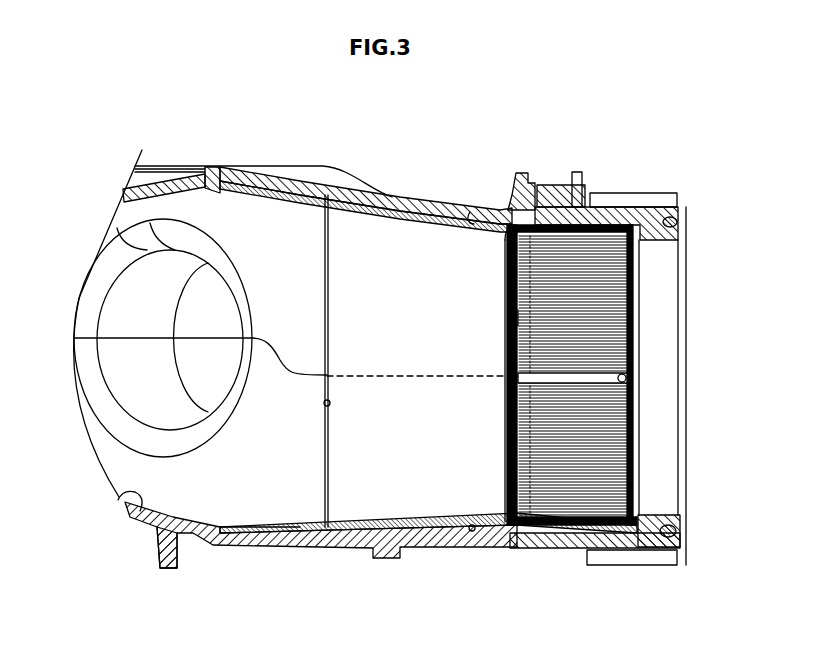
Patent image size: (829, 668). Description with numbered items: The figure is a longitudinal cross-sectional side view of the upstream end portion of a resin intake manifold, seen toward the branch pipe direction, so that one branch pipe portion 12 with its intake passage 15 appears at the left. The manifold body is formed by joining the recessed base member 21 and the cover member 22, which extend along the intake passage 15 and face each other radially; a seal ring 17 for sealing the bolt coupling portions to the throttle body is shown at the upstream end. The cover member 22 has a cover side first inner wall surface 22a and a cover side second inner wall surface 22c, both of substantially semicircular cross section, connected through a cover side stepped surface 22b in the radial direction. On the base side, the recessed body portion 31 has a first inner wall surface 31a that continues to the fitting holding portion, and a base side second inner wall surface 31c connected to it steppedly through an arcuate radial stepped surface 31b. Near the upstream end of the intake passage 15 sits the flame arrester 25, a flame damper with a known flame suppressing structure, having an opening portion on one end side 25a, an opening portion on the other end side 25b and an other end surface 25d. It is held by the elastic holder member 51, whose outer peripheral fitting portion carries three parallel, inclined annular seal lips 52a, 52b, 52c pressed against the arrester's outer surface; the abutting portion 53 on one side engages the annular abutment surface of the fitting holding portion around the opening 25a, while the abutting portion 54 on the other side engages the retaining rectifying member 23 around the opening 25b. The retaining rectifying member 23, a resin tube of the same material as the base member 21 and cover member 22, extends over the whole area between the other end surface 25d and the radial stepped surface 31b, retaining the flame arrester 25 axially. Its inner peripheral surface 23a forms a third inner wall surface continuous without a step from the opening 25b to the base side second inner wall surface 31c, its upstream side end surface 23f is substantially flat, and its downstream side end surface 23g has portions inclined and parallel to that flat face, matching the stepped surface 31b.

The branch pipe portion 12 is at (125, 385).
The intake passage 15 is at (656, 362).
The seal ring 17 is at (686, 213).
The base member 21 is at (312, 552).
The cover member 22 is at (425, 205).
The cover side first inner wall surface 22a is at (470, 220).
The cover side stepped surface 22b is at (218, 190).
The cover side second inner wall surface 22c is at (140, 197).
The retaining rectifying member 23 is at (365, 535).
The inner peripheral surface 23a is at (465, 237).
The upstream side end surface 23f is at (520, 318).
The downstream side end surface 23g is at (330, 403).
The flame arrester 25 is at (615, 427).
The opening portion on one end side 25a is at (635, 295).
The opening portion on the other end side 25b is at (515, 470).
The other end surface 25d is at (512, 392).
The recessed body portion 31 is at (195, 538).
The first inner wall surface 31a is at (472, 531).
The radial stepped surface 31b is at (230, 517).
The base side second inner wall surface 31c is at (125, 503).
The elastic holder member 51 is at (555, 549).
The annular seal lip 52a is at (607, 212).
The annular seal lip 52b is at (585, 208).
The annular seal lip 52c is at (552, 222).
The abutting portion on one side 53 is at (640, 496).
The abutting portion on the other side 54 is at (508, 236).